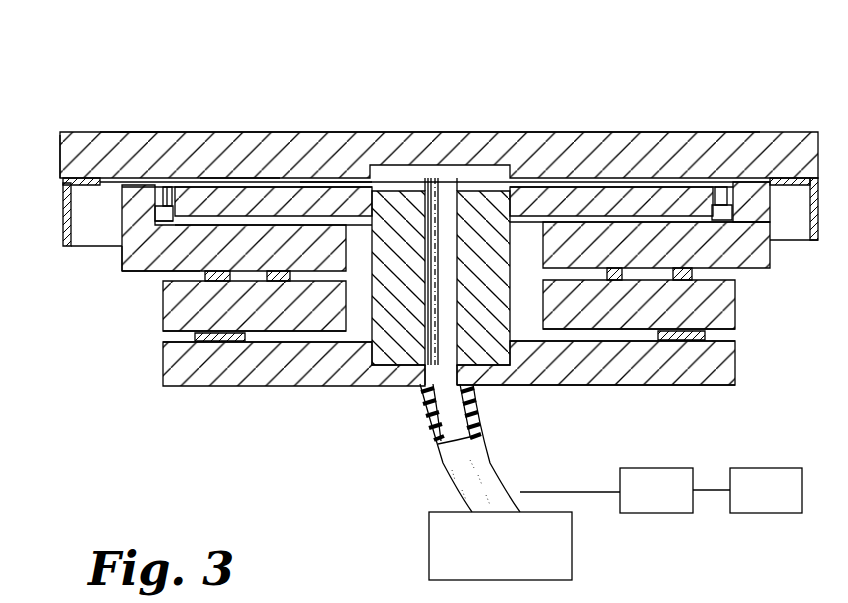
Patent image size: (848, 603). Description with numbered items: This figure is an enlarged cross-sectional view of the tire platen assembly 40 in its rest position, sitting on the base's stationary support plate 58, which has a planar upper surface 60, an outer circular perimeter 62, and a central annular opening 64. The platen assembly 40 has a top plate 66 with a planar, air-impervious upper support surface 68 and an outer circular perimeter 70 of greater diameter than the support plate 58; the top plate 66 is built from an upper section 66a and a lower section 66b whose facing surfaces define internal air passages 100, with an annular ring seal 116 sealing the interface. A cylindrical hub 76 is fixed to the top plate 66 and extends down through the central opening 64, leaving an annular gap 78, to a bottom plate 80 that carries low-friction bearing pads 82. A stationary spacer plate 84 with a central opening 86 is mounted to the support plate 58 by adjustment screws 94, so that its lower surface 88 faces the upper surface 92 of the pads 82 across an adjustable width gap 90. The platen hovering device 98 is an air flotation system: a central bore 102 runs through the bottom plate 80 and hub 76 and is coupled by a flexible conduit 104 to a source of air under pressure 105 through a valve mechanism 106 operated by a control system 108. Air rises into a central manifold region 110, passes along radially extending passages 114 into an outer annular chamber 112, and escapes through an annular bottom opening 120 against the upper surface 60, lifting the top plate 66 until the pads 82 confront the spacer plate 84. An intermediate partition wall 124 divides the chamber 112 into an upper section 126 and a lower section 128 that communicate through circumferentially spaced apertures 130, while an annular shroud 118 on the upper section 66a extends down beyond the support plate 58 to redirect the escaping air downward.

The platen assembly 40 is at (82, 106).
The stationary support plate 58 is at (168, 288).
The upper surface 60 is at (152, 199).
The outer circular perimeter 62 is at (122, 269).
The central annular opening 64 is at (362, 197).
The top plate 66 is at (59, 128).
The upper section 66a is at (121, 132).
The lower section 66b is at (240, 190).
The upper support surface 68 is at (564, 131).
The outer circular perimeter 70 is at (60, 162).
The cylindrical hub 76 is at (402, 372).
The annular gap 78 is at (362, 310).
The bottom plate 80 is at (163, 364).
The bearing pads 82 is at (202, 345).
The stationary spacer plate 84 is at (736, 305).
The central opening 86 is at (532, 386).
The lower surface 88 is at (736, 358).
The adjustable width gap 90 is at (215, 338).
The upper surface 92 is at (244, 322).
The adjustment screws 94 is at (250, 278).
The platen hovering device 98 is at (446, 492).
The internal air passages 100 is at (466, 170).
The central bore 102 is at (415, 352).
The flexible conduit 104 is at (483, 460).
The source of air under pressure 105 is at (429, 549).
The valve mechanism 106 is at (646, 514).
The control system 108 is at (765, 514).
The central manifold region 110 is at (430, 195).
The outer annular chamber 112 is at (203, 200).
The radially extending passages 114 is at (277, 202).
The annular ring seal 116 is at (134, 184).
The annular shroud 118 is at (818, 206).
The annular bottom opening 120 is at (725, 221).
The intermediate partition wall 124 is at (66, 200).
The upper section 126 is at (170, 195).
The lower section 128 is at (158, 212).
The apertures 130 is at (165, 200).